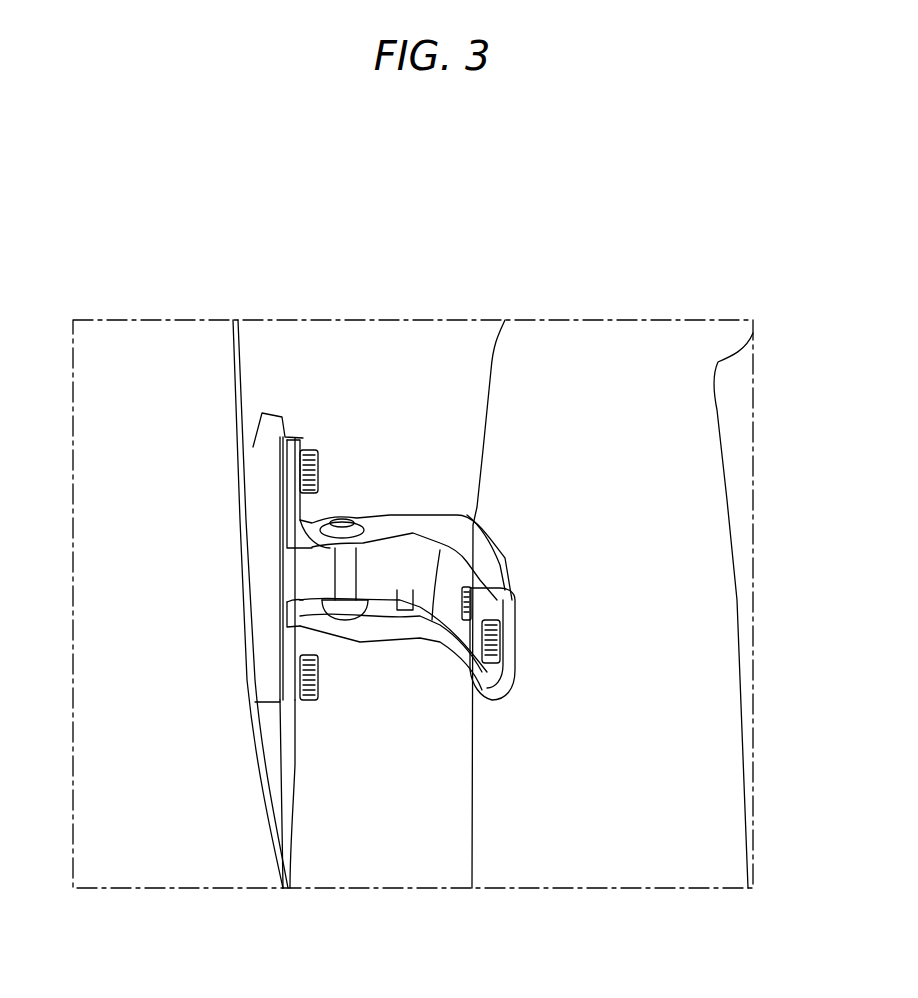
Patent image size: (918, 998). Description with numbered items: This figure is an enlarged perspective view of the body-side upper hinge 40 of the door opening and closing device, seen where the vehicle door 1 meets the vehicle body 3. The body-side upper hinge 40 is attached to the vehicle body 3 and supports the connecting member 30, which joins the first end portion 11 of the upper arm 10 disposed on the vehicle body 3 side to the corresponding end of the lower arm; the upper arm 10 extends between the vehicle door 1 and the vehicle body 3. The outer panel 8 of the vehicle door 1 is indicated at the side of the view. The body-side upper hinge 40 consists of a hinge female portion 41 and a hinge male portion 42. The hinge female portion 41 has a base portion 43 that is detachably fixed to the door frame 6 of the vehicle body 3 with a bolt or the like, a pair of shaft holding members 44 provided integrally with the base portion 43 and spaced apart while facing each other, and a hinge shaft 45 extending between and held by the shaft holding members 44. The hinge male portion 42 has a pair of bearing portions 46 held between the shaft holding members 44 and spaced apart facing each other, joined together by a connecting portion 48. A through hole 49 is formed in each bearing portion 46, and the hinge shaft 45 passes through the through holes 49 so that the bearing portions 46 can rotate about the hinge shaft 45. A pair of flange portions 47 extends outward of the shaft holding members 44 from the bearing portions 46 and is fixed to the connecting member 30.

The vehicle door 1 is at (95, 570).
The vehicle body 3 is at (745, 573).
The door frame 6 is at (680, 825).
The outer panel 8 is at (157, 808).
The upper arm 10 is at (268, 402).
The first end portion 11 is at (283, 420).
The connecting member 30 is at (295, 765).
The body-side upper hinge 40 is at (376, 432).
The hinge female portion 41 is at (557, 393).
The hinge male portion 42 is at (625, 687).
The base portion 43 is at (512, 620).
The shaft holding members 44 is at (398, 520).
The hinge shaft 45 is at (347, 520).
The bearing portions 46 is at (420, 675).
The flange portions 47 is at (405, 750).
The connecting portion 48 is at (480, 672).
The through hole 49 is at (372, 608).